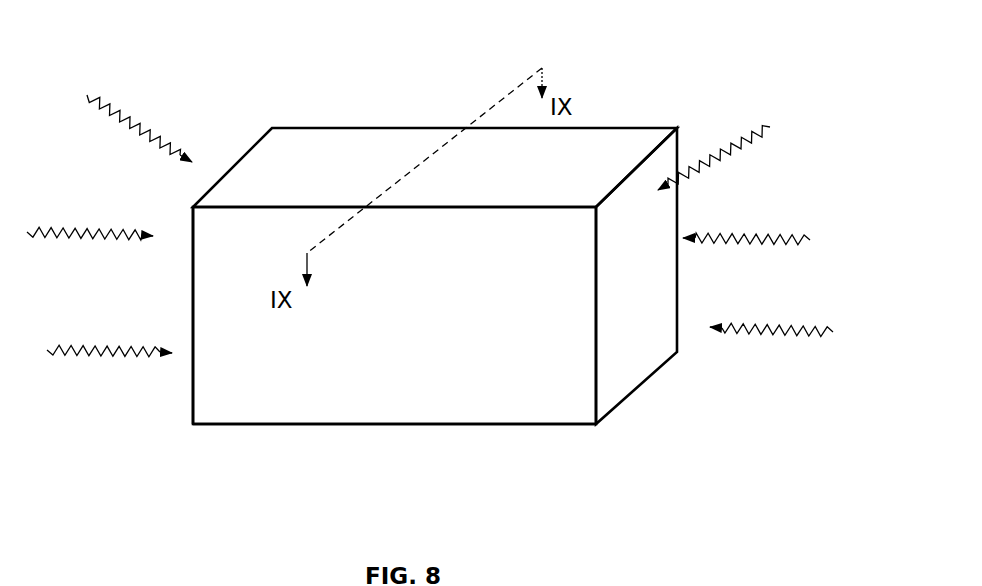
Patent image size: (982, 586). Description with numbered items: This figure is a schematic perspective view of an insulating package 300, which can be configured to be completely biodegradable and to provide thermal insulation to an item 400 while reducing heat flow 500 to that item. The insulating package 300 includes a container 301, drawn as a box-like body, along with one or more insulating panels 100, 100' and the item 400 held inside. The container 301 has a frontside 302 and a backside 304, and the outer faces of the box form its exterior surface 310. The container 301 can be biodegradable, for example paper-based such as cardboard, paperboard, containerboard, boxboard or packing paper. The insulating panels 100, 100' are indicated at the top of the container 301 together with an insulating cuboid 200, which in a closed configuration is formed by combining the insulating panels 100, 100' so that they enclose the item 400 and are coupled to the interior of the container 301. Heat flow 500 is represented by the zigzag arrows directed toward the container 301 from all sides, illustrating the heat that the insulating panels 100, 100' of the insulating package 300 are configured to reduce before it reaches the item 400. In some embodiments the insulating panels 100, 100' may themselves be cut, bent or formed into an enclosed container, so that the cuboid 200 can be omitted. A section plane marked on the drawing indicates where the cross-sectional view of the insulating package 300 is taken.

The insulating package 300 is at (688, 64).
The container 301 is at (238, 402).
The frontside 302 is at (605, 144).
The backside 304 is at (547, 440).
The exterior surface 310 is at (220, 300).
The item 400 is at (378, 308).
The heat flow 500 is at (128, 115).
The insulating panel 100 is at (381, 116).
The insulating panel 100' is at (381, 116).
The insulating cuboid 200 is at (377, 112).